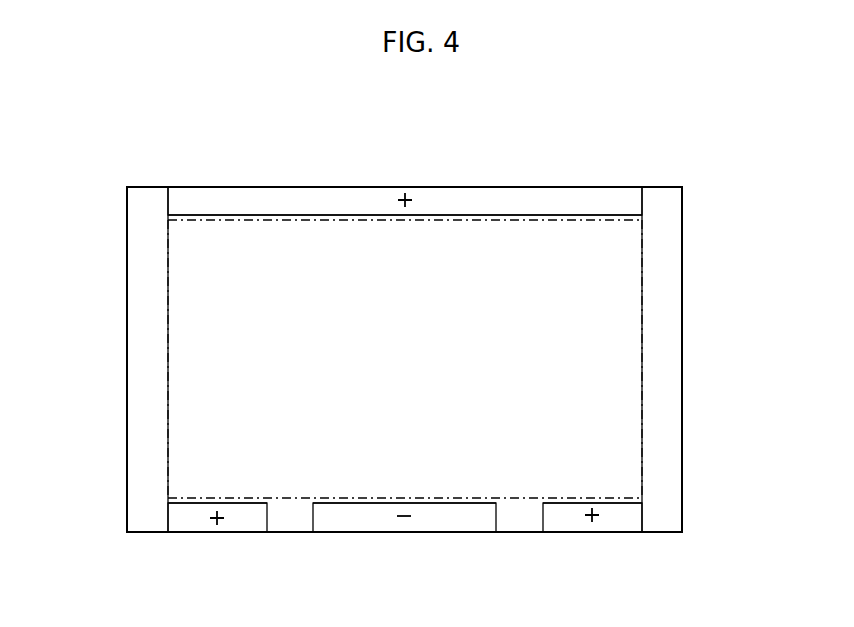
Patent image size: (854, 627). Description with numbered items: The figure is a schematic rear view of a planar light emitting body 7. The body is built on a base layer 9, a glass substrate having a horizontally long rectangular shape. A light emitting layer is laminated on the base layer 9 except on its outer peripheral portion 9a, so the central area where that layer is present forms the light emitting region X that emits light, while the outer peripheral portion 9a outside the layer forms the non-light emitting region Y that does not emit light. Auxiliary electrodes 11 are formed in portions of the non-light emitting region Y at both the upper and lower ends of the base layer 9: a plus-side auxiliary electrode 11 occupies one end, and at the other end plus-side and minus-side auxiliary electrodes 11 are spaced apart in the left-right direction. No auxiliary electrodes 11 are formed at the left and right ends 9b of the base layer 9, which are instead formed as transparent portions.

The planar light emitting body 7 is at (740, 146).
The base layer 9 is at (673, 373).
The outer peripheral portion 9a is at (673, 432).
The left and right ends 9b is at (673, 475).
The auxiliary electrode 11 is at (433, 197).
The light emitting region X is at (613, 257).
The non-light emitting region Y is at (673, 316).